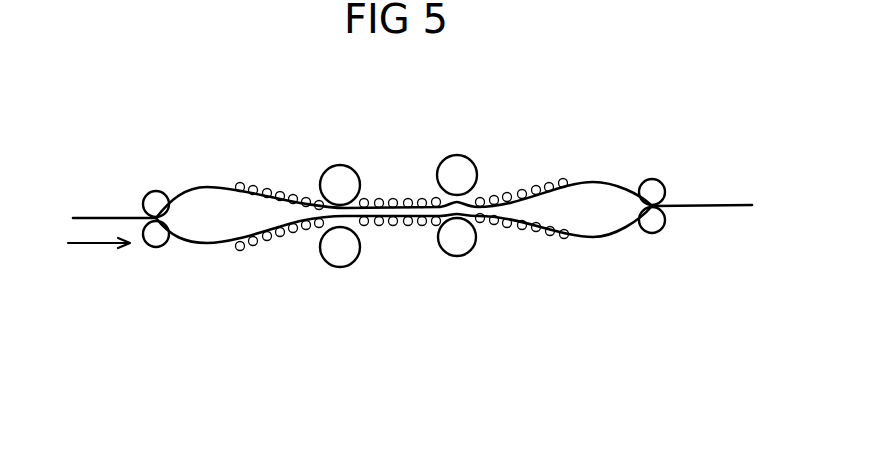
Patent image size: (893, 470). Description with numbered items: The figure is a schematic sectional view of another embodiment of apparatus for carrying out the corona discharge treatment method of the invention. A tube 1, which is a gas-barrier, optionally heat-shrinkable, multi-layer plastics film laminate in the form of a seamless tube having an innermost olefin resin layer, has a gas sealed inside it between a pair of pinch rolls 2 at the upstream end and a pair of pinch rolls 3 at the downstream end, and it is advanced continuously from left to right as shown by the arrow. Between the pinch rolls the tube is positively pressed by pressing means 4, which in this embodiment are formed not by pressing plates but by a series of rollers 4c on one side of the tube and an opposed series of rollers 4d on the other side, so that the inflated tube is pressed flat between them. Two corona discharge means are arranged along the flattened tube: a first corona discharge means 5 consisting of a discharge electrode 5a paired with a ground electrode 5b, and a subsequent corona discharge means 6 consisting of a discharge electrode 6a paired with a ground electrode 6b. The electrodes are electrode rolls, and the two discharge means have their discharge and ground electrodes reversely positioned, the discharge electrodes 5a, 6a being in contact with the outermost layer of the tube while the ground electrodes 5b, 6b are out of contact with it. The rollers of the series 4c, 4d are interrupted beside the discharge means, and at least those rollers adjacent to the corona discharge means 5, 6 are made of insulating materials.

The tube 1 is at (220, 187).
The pinch rolls 2 is at (160, 191).
The pinch rolls 3 is at (652, 179).
The pressing means 4 is at (402, 205).
The series of rollers 4c is at (270, 187).
The series of rollers 4d is at (267, 247).
The corona discharge means 5 is at (341, 244).
The discharge electrode 5a is at (340, 268).
The ground electrode 5b is at (340, 165).
The corona discharge means 6 is at (482, 244).
The discharge electrode 6a is at (470, 157).
The ground electrode 6b is at (457, 256).